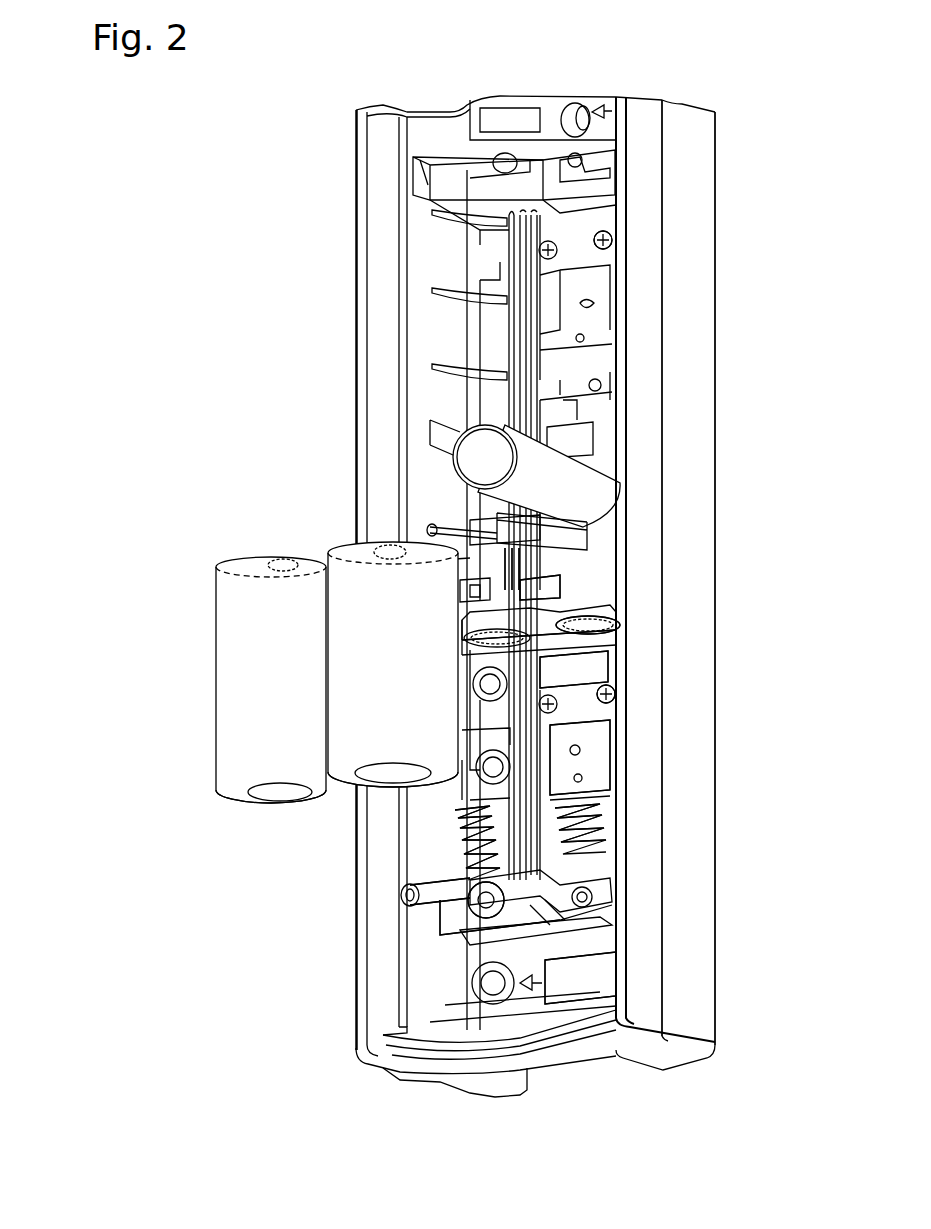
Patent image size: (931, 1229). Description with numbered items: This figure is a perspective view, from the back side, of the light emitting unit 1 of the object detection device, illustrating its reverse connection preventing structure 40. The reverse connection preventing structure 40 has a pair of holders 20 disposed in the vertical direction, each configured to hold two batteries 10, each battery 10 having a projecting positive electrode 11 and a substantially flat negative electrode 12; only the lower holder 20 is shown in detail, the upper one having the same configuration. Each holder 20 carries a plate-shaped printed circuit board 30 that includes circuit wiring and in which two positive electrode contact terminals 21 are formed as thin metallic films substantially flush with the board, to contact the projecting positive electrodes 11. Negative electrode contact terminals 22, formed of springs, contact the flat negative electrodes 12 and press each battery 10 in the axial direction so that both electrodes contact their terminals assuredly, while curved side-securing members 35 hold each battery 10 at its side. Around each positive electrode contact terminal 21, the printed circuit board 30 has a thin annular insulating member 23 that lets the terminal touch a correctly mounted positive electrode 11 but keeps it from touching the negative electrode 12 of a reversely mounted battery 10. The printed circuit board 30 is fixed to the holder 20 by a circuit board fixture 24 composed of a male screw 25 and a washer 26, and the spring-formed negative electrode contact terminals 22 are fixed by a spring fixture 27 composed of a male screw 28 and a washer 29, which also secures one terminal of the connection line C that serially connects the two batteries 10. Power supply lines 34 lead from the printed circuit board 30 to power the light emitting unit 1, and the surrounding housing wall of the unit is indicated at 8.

The light emitting unit 1 is at (340, 262).
The housing side wall 8 is at (692, 446).
The battery 10 is at (218, 646).
The positive electrode 11 is at (340, 540).
The negative electrode 12 is at (276, 792).
The holder 20 is at (338, 382).
The positive electrode contact terminal 21 is at (618, 624).
The negative electrode contact terminal 22 is at (625, 824).
The insulating member 23 is at (620, 664).
The circuit board fixture 24 is at (791, 515).
The male screw 25 is at (628, 580).
The washer 26 is at (622, 612).
The spring fixture 27 is at (278, 957).
The male screw 28 is at (478, 893).
The washer 29 is at (468, 908).
The printed circuit board 30 is at (620, 634).
The power supply line 34 is at (600, 560).
The side-securing member 35 is at (625, 752).
The reverse connection preventing structure 40 is at (103, 395).
The connection line C is at (530, 948).